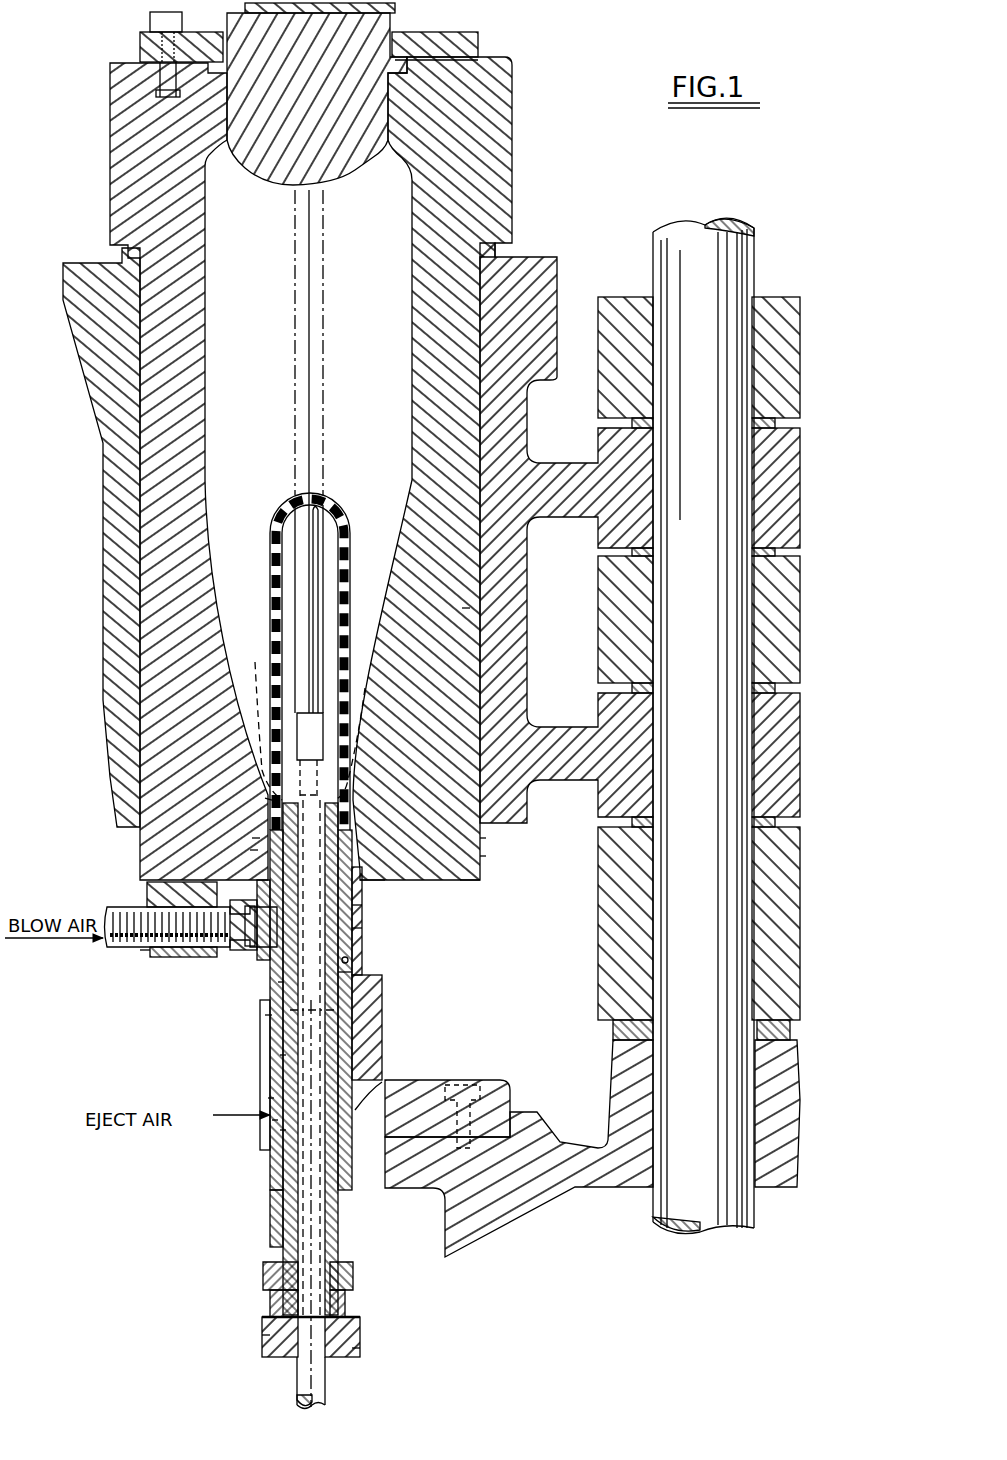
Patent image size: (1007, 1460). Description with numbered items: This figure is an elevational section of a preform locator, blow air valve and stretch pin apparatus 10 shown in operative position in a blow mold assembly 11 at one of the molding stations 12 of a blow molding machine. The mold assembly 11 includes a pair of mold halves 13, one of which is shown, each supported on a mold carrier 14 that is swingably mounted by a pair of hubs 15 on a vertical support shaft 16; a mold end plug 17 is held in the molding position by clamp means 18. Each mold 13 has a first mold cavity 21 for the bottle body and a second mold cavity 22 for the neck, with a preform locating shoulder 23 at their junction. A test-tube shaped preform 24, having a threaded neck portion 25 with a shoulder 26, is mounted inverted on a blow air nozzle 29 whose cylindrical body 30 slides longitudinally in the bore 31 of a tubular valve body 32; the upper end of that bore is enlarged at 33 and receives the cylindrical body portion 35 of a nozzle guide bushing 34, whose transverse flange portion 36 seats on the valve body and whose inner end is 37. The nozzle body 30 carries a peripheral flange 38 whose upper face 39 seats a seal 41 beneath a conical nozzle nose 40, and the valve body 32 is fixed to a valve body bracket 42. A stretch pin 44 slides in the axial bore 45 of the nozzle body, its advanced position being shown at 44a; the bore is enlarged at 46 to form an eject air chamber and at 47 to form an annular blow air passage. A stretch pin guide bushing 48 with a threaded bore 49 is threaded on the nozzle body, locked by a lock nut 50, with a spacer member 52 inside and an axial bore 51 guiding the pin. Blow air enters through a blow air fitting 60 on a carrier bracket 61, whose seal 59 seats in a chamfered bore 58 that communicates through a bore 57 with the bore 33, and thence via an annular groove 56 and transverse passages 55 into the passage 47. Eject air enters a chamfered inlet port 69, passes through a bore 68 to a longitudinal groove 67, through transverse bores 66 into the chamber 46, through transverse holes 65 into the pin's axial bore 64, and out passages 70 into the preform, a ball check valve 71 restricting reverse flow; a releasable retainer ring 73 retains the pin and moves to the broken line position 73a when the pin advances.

The preform locator, blow air valve and stretch pin apparatus 10 is at (270, 1082).
The blow mold assembly 11 is at (488, 688).
The molding station 12 is at (609, 1087).
The mold half 13 is at (462, 608).
The mold carrier 14 is at (520, 822).
The hub 15 is at (598, 448).
The vertical support shaft 16 is at (678, 673).
The mold end plug 17 is at (405, 22).
The clamp means 18 is at (482, 52).
The first mold cavity 21 is at (407, 605).
The second mold cavity 22 is at (483, 858).
The preform locating shoulder 23 is at (484, 840).
The preform 24 is at (356, 514).
The outer sleeve 25 is at (262, 827).
The shoulder 26 is at (262, 822).
The blow air nozzle 29 is at (280, 992).
The cylindrical body 30 is at (280, 982).
The bore 31 is at (366, 990).
The tubular valve body 32 is at (268, 1016).
The enlarged bore 33 is at (362, 945).
The nozzle guide bushing 34 is at (182, 894).
The cylindrical body portion 35 is at (362, 910).
The transverse flange portion 36 is at (385, 876).
The inner end 37 is at (362, 927).
The peripheral flange 38 is at (256, 850).
The upper face 39 is at (258, 838).
The conical nozzle nose 40 is at (270, 800).
The seal 41 is at (462, 880).
The valve body bracket 42 is at (472, 1082).
The stretch pin 44 is at (352, 972).
The stretch pin (inward position) 44a is at (333, 262).
The axial bore 45 is at (348, 960).
The enlarged bore 46 is at (354, 1262).
The annular passage 47 is at (304, 1059).
The stretch pin guide bushing 48 is at (266, 1310).
The threaded bore 49 is at (346, 1302).
The lock nut 50 is at (354, 1280).
The axial bore 51 is at (297, 1360).
The spacer member 52 is at (361, 1330).
The transverse passage 55 is at (318, 1059).
The annular groove 56 is at (265, 903).
The bore 57 is at (185, 912).
The chamfered bore 58 is at (183, 963).
The seal 59 is at (252, 952).
The blow air fitting 60 is at (243, 950).
The carrier bracket 61 is at (147, 953).
The axial bore 64 is at (283, 1220).
The transverse hole 65 is at (262, 1336).
The transverse bore 66 is at (275, 1121).
The annular longitudinally extended groove 67 is at (283, 1056).
The bore 68 is at (283, 1131).
The chamfered inlet port 69 is at (270, 1099).
The passage 70 is at (309, 718).
The ball check valve 71 is at (336, 762).
The releasable retainer ring 73 is at (335, 1317).
The retainer ring (broken line position) 73a is at (270, 1030).